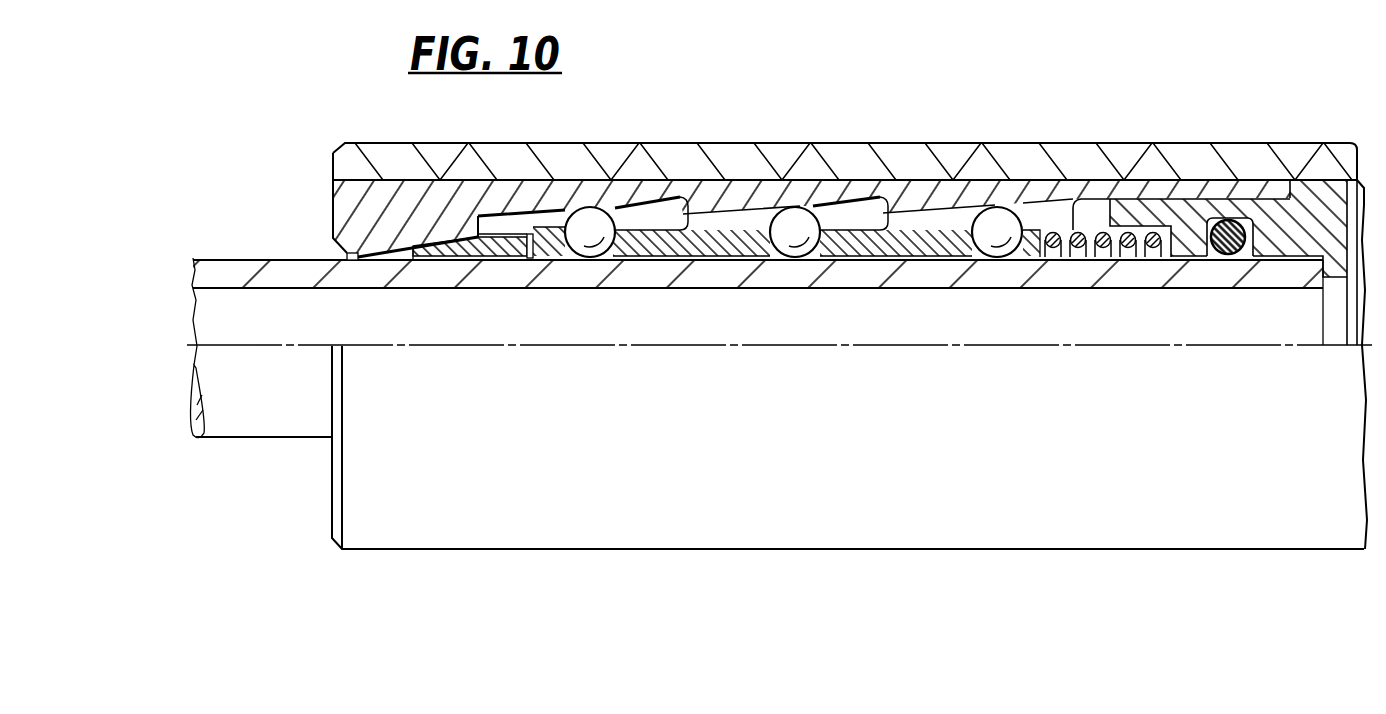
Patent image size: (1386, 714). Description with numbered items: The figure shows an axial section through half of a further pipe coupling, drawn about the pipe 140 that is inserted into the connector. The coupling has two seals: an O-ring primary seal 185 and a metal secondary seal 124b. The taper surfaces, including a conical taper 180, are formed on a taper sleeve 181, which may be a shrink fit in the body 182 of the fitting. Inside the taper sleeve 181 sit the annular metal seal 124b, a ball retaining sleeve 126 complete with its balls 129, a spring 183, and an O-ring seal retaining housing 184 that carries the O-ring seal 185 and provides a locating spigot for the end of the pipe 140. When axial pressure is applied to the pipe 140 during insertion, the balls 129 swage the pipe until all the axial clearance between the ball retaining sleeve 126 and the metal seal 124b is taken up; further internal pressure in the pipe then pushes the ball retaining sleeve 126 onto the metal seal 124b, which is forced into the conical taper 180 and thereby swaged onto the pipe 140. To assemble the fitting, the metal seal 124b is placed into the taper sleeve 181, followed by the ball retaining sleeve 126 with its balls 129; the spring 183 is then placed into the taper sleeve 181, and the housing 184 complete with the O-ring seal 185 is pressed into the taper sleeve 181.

The pipe 140 is at (262, 270).
The conical taper 180 is at (383, 252).
The metal secondary seal 124b is at (443, 240).
The body of the fitting 182 is at (589, 150).
The taper sleeve 181 is at (705, 192).
The ball retaining sleeve 126 is at (838, 237).
The balls 129 is at (990, 222).
The spring 183 is at (1073, 232).
The O-ring primary seal 185 is at (1220, 222).
The O-ring seal retaining housing 184 is at (1313, 197).